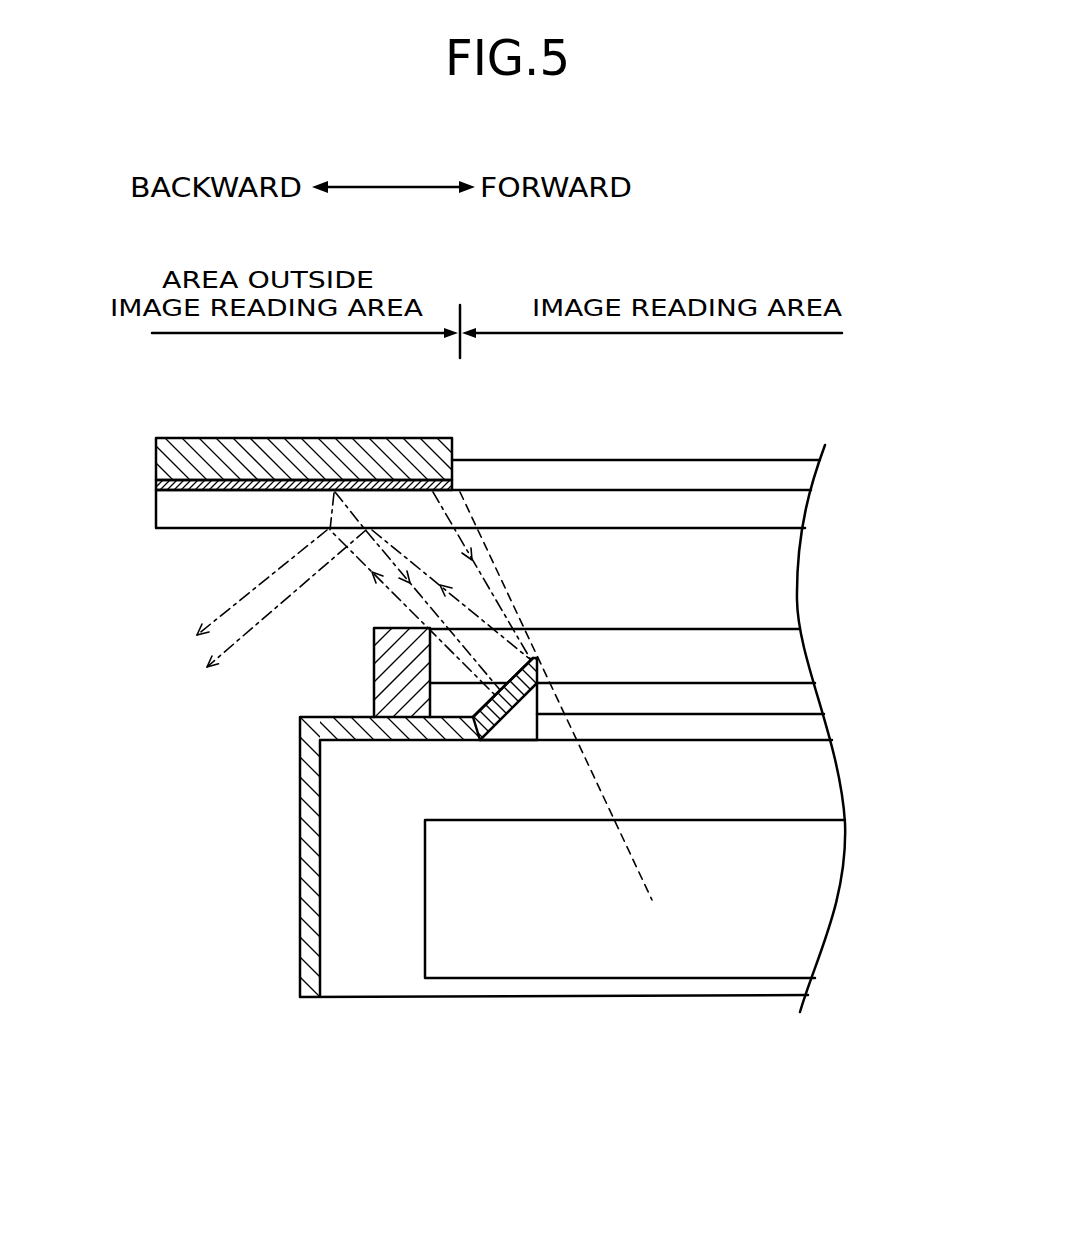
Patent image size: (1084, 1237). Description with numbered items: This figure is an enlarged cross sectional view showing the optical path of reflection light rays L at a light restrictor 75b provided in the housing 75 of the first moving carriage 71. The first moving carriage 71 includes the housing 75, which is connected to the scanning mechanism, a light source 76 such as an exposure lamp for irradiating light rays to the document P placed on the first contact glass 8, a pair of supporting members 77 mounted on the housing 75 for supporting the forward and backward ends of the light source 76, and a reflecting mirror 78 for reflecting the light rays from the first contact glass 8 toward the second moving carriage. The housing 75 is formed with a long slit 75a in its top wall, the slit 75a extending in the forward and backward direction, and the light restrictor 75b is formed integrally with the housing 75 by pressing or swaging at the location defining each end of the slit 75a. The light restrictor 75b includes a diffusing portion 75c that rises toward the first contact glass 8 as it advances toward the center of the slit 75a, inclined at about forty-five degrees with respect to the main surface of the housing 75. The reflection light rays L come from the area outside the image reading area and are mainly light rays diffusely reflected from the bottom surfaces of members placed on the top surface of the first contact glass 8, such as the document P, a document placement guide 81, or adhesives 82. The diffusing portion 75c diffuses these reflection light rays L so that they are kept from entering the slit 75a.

The first contact glass 8 is at (163, 515).
The document placement guide 81 is at (180, 438).
The adhesives 82 is at (157, 486).
The first moving carriage 71 is at (550, 819).
The housing 75 is at (299, 829).
The slit 75a is at (806, 732).
The light restrictor 75b is at (543, 703).
The diffusing portion 75c is at (519, 671).
The light source 76 is at (790, 662).
The supporting members 77 is at (374, 666).
The reflecting mirror 78 is at (555, 960).
The reflection light rays L is at (335, 492).
The document P is at (687, 474).